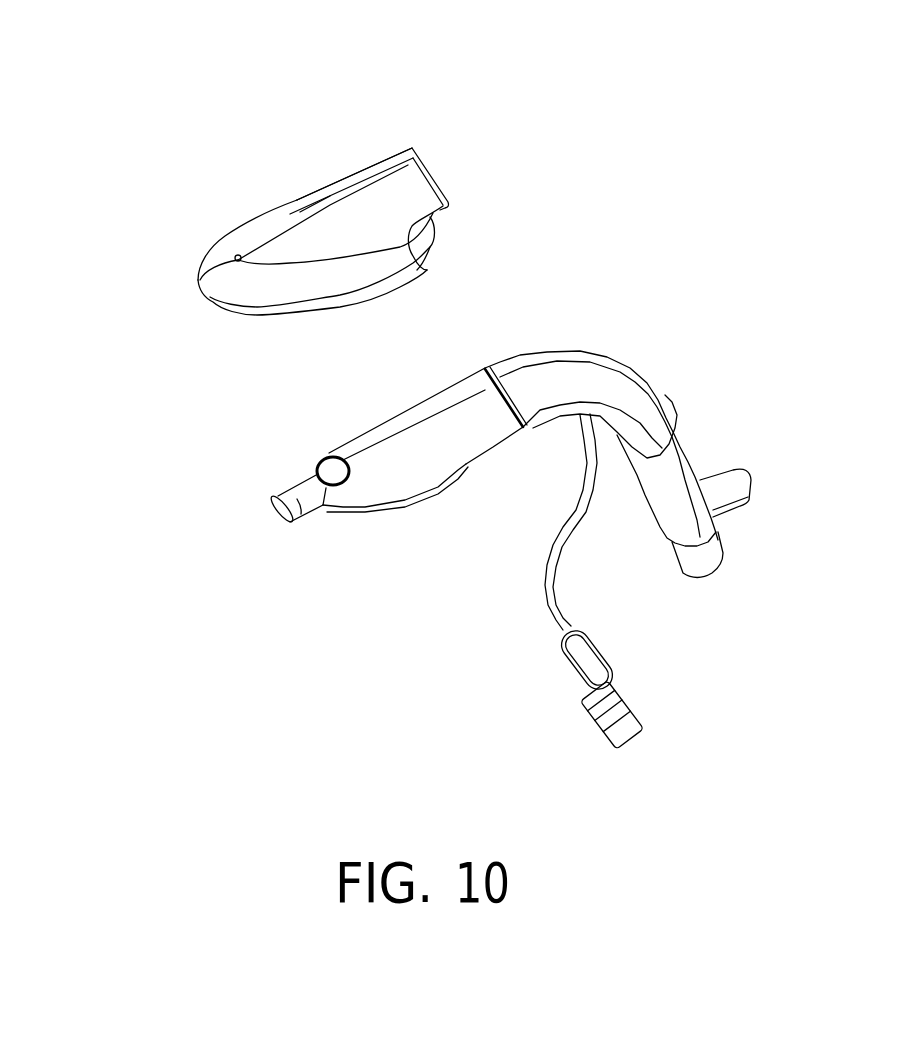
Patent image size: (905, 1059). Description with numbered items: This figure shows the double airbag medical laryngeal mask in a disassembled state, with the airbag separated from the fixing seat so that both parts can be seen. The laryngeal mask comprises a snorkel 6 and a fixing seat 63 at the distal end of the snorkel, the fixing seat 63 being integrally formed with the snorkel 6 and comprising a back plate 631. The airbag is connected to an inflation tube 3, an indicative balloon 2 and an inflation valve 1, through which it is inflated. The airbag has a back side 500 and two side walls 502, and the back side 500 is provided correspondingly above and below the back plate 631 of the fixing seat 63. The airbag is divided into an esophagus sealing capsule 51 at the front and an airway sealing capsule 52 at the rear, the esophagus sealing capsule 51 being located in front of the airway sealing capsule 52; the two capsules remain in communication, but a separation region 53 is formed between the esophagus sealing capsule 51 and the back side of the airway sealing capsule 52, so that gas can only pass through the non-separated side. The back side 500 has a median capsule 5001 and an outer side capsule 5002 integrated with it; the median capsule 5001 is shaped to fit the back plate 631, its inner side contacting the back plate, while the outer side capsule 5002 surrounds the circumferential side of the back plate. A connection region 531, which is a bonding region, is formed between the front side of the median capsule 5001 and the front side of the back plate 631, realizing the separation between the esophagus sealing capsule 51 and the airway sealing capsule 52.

The back side 500 is at (344, 178).
The esophagus sealing capsule 51 is at (202, 257).
The airway sealing capsule 52 is at (297, 198).
The separation region 53 is at (238, 257).
The median capsule 5001 is at (324, 218).
The outer side capsule 5002 is at (260, 293).
The side walls 502 is at (275, 307).
The back plate 631 is at (418, 400).
The snorkel 6 is at (652, 400).
The fixing seat 63 is at (395, 499).
The connection region 531 is at (340, 463).
The inflation tube 3 is at (553, 543).
The indicative balloon 2 is at (585, 670).
The inflation valve 1 is at (606, 720).